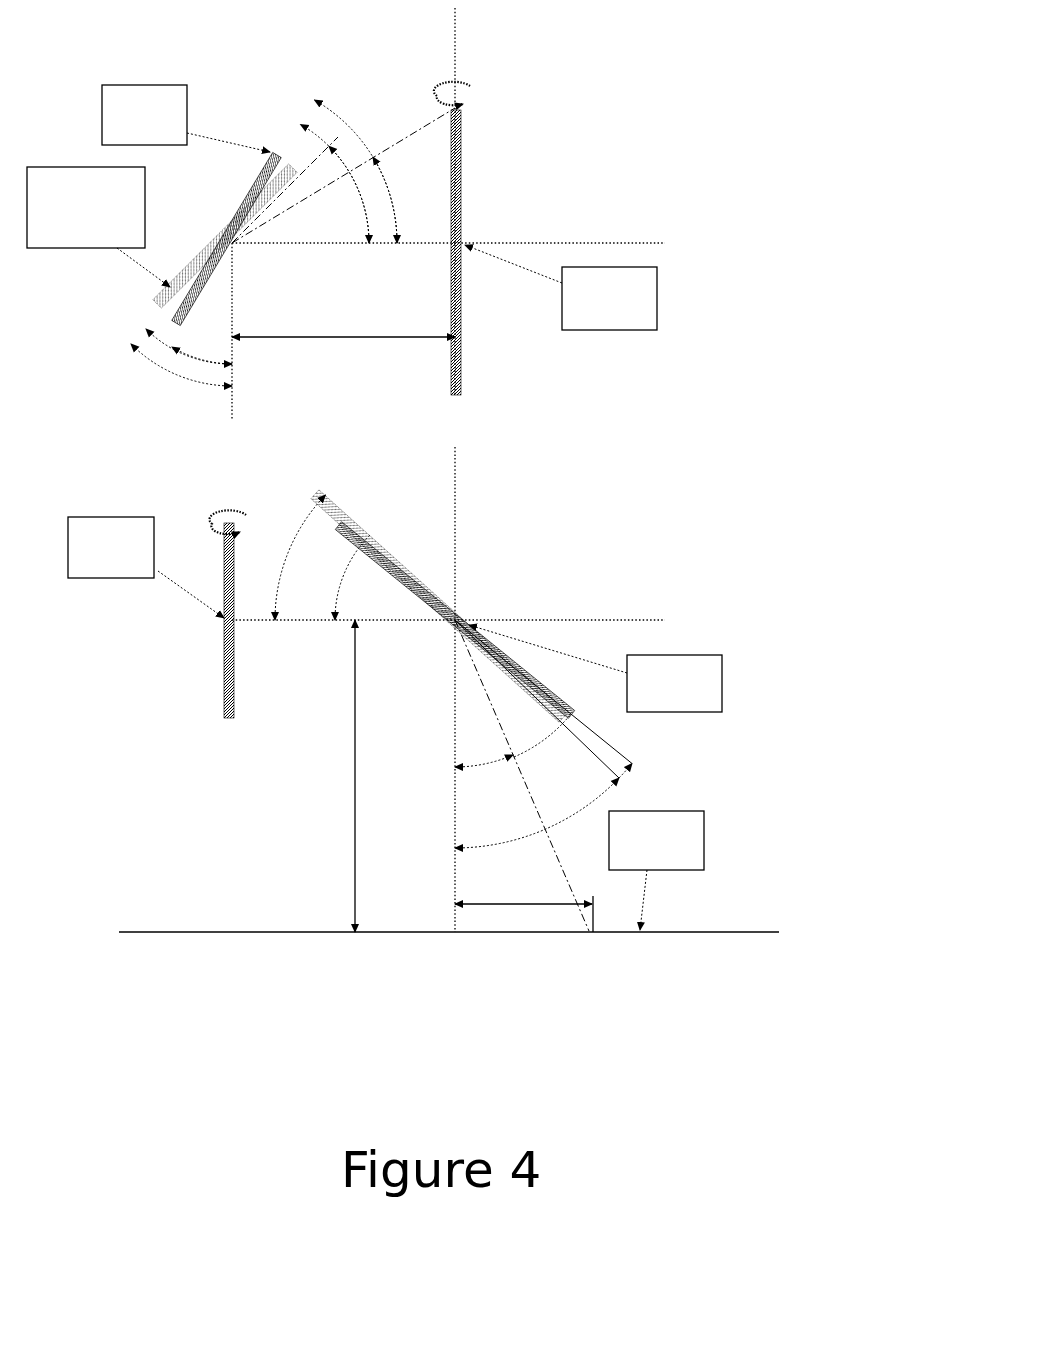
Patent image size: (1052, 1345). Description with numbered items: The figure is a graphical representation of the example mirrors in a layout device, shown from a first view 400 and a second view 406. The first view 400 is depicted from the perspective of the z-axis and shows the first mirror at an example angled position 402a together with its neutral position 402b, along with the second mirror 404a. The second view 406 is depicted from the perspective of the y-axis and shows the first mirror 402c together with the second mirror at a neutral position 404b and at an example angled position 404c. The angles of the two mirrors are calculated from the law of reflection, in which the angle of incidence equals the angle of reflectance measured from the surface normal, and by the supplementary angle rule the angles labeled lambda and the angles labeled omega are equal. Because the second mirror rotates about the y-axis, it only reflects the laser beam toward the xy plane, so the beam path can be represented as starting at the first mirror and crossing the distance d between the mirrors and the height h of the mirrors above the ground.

The first view 400 is at (110, 70).
The angled position of the first mirror 402a is at (257, 188).
The neutral position of the first mirror 402b is at (167, 297).
The second mirror 404a is at (462, 173).
The second view 406 is at (108, 480).
The first mirror 402c is at (226, 689).
The neutral position of the second mirror 404b is at (356, 514).
The angled position of the second mirror 404c is at (477, 636).